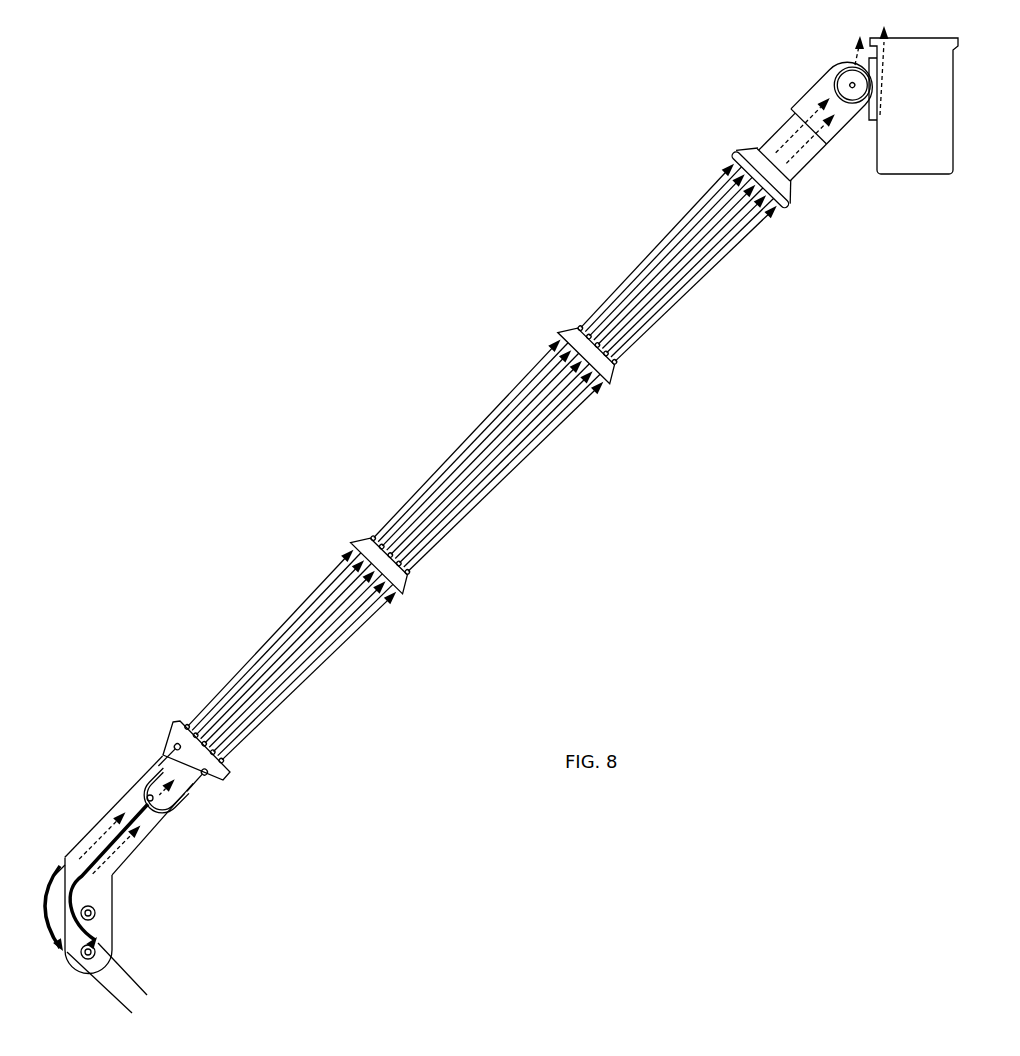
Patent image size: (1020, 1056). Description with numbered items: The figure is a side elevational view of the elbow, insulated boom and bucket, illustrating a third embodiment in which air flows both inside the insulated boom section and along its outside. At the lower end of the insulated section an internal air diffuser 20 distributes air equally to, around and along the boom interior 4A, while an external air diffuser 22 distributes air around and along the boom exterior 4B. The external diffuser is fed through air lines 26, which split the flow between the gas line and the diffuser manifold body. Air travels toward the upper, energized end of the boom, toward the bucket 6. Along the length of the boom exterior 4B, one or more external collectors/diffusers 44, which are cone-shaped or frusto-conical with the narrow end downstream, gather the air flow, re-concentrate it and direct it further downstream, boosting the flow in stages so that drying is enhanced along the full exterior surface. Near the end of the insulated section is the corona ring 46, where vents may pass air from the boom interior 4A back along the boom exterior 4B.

The internal air diffuser 20 is at (60, 873).
The external air diffuser 22 is at (212, 772).
The air lines 26 is at (163, 802).
The external collectors/diffusers 44 is at (557, 338).
The corona ring 46 is at (733, 153).
The boom interior 4A is at (797, 143).
The boom exterior 4B is at (657, 310).
The bucket 6 is at (914, 177).